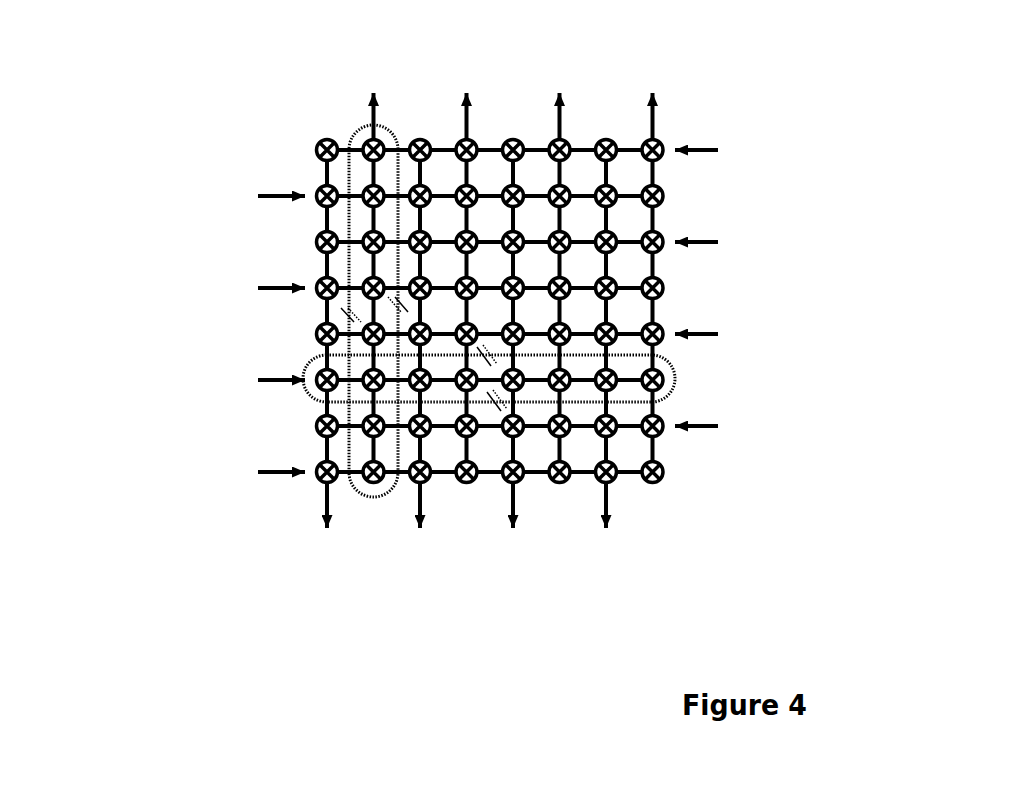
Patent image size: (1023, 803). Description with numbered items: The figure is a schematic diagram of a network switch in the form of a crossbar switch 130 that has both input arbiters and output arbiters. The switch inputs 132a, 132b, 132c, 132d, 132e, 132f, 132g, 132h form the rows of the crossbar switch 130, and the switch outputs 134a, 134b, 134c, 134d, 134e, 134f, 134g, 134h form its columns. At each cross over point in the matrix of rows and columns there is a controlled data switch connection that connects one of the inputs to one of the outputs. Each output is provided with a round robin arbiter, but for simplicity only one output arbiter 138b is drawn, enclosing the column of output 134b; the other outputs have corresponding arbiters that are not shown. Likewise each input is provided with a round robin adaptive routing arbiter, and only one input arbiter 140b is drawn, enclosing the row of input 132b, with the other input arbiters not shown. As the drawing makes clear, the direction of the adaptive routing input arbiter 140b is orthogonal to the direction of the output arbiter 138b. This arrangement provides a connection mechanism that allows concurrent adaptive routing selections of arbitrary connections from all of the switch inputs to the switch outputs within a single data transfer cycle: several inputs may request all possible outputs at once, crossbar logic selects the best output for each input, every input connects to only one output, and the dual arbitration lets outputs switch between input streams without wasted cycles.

The crossbar switch 130 is at (892, 101).
The switch input 132a is at (554, 147).
The switch input 132b is at (414, 192).
The switch input 132c is at (560, 238).
The switch input 132d is at (414, 285).
The switch input 132e is at (555, 331).
The switch input 132f is at (416, 378).
The switch input 132g is at (554, 425).
The switch input 132h is at (414, 471).
The switch output 134a is at (341, 355).
The switch output 134b is at (387, 265).
The switch output 134c is at (433, 355).
The switch output 134d is at (483, 265).
The switch output 134e is at (512, 355).
The switch output 134f is at (566, 260).
The switch output 134g is at (617, 355).
The switch output 134h is at (665, 260).
The output arbiter 138b is at (361, 137).
The input arbiter 140b is at (675, 379).